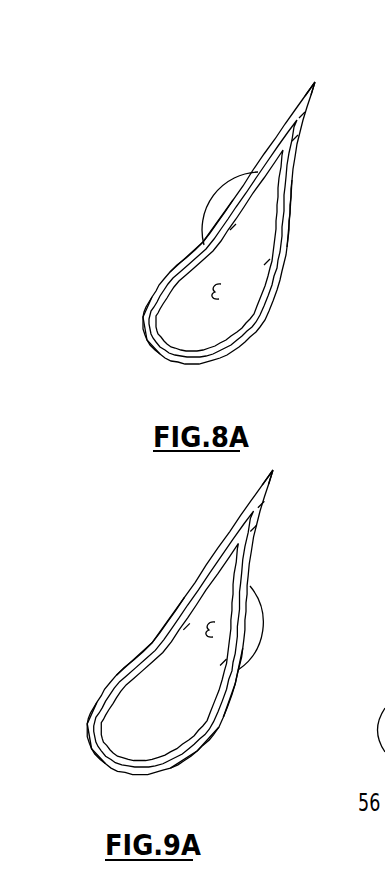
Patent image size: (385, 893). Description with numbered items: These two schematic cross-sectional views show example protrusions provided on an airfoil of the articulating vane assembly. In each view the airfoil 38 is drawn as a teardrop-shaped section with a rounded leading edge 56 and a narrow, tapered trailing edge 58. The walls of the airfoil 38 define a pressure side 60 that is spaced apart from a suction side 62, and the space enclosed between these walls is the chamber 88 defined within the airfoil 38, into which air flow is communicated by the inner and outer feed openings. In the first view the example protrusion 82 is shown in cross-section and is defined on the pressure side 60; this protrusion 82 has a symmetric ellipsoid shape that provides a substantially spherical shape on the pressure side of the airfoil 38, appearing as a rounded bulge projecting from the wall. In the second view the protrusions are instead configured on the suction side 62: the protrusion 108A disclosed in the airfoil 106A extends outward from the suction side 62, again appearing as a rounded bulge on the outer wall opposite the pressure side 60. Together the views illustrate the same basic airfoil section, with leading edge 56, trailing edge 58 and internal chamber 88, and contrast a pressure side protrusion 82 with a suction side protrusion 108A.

In FIG. 8A, the airfoil 38 is at (119, 364).
In FIG. 8A, the leading edge 56 is at (171, 363).
In FIG. 9A, the leading edge 56 is at (109, 762).
In FIG. 8A, the trailing edge 58 is at (315, 82).
In FIG. 9A, the trailing edge 58 is at (273, 470).
In FIG. 8A, the pressure side 60 is at (163, 270).
In FIG. 9A, the pressure side 60 is at (136, 653).
In FIG. 8A, the suction side 62 is at (293, 225).
In FIG. 9A, the suction side 62 is at (231, 697).
In FIG. 8A, the protrusion 82 is at (200, 206).
In FIG. 8A, the chamber 88 is at (221, 284).
In FIG. 9A, the chamber 88 is at (214, 622).
In FIG. 9A, the airfoil 106A is at (203, 768).
In FIG. 9A, the protrusion 108A is at (272, 613).